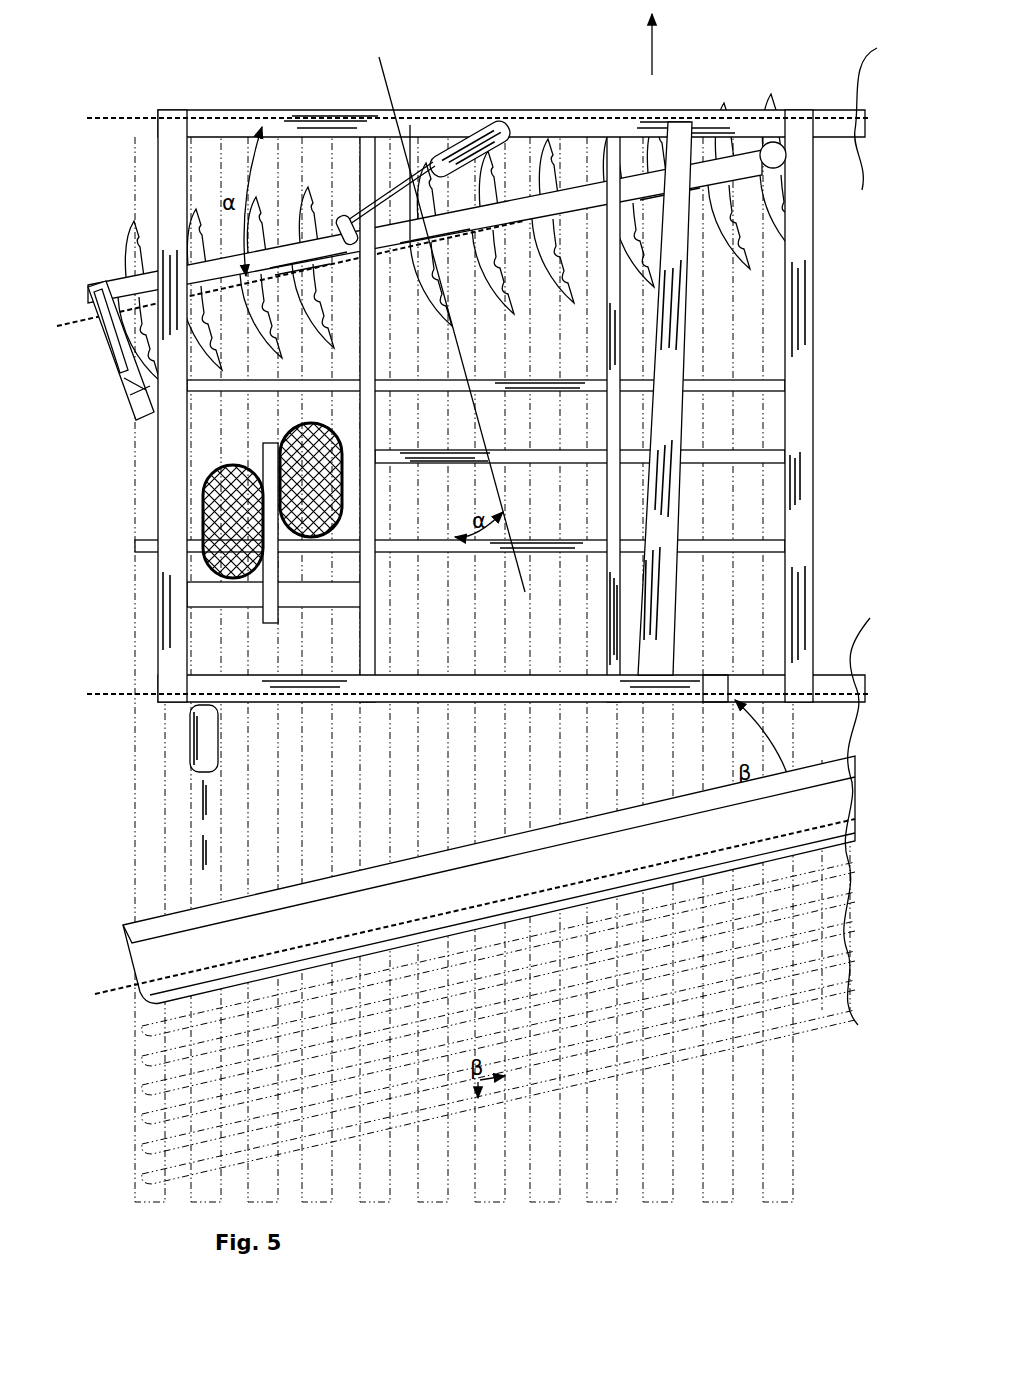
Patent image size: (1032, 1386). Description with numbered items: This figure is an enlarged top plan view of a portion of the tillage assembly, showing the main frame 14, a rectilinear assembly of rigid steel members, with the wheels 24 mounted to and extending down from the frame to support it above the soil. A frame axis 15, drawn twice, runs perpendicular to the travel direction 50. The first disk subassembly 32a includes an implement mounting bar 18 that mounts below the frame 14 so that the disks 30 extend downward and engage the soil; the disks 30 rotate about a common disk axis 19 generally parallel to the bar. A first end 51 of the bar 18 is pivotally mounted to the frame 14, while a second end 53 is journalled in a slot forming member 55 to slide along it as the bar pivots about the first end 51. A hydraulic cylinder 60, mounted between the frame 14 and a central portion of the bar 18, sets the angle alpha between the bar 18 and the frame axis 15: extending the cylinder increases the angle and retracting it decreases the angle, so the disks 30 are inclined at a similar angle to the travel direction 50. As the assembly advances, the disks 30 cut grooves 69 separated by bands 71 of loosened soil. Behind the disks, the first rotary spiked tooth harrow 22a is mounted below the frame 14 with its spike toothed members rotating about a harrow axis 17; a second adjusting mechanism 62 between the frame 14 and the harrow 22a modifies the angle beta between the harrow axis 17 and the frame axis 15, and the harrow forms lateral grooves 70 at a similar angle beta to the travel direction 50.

The main frame 14 is at (284, 117).
The frame axis 15 is at (136, 118).
The harrow axis 17 is at (114, 990).
The implement mounting bar 18 is at (446, 309).
The disk axis 19 is at (88, 325).
The first rotary spiked tooth harrow 22a is at (184, 950).
The wheels 24 is at (203, 518).
The disks 30 is at (600, 180).
The first disk subassembly 32a is at (148, 222).
The travel direction 50 is at (652, 42).
The first end of bar 51 is at (778, 150).
The second end of bar 53 is at (130, 303).
The slot forming member 55 is at (118, 342).
The hydraulic cylinder 60 is at (455, 132).
The second adjusting mechanism 62 is at (205, 738).
The grooves 69 is at (710, 513).
The lateral grooves 70 is at (767, 977).
The loosened soil bands 71 is at (682, 640).